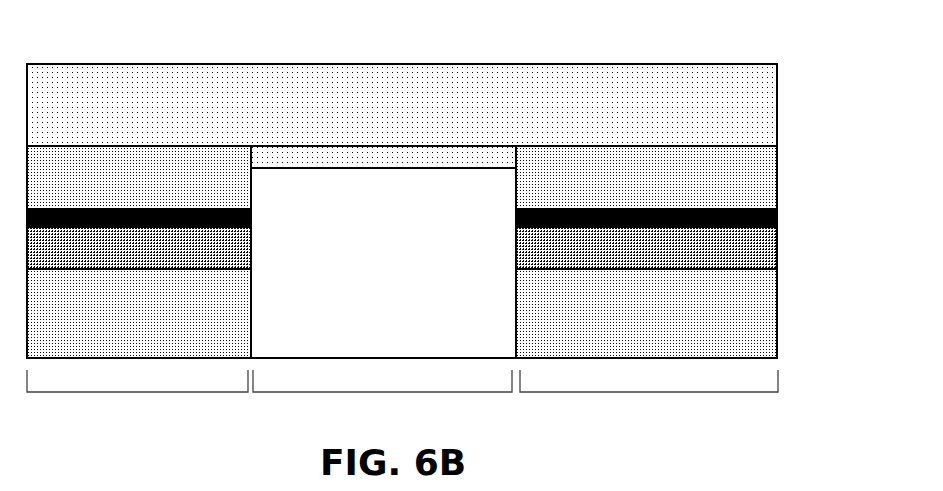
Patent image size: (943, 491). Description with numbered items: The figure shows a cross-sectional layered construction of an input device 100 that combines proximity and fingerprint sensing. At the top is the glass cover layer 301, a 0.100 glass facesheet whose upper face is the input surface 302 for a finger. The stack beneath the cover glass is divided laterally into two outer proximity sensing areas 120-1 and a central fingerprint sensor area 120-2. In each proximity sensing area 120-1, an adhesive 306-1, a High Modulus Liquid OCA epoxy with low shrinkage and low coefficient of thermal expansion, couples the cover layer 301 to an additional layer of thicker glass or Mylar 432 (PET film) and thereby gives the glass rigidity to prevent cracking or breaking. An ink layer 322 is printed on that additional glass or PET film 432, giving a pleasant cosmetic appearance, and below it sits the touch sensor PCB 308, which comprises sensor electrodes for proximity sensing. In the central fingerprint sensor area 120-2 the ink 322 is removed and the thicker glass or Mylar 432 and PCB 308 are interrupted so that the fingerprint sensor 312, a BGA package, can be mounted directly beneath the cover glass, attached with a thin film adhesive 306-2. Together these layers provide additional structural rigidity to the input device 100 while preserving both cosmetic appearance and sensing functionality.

The input device 100 is at (190, 38).
The input surface 302 is at (640, 64).
The glass cover layer 301 is at (402, 105).
The adhesive 306-1 is at (402, 177).
The thin film adhesive 306-2 is at (383, 157).
The fingerprint sensor 312 is at (383, 263).
The ink layer 322 is at (777, 210).
The thicker glass or Mylar layer 432 is at (402, 248).
The touch sensor PCB 308 is at (402, 313).
The proximity sensing area 120-1 is at (137, 392).
The fingerprint sensor area 120-2 is at (383, 392).